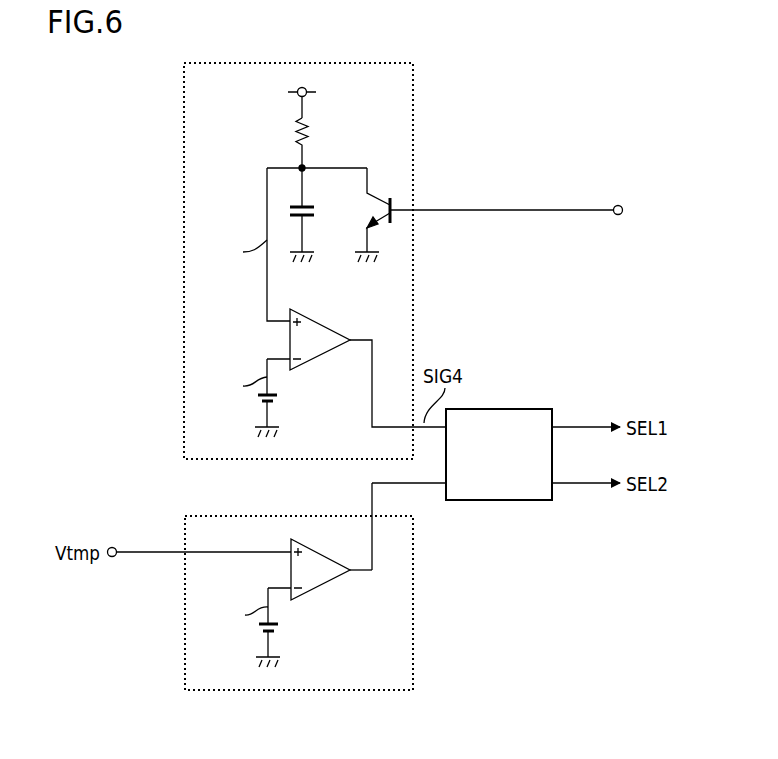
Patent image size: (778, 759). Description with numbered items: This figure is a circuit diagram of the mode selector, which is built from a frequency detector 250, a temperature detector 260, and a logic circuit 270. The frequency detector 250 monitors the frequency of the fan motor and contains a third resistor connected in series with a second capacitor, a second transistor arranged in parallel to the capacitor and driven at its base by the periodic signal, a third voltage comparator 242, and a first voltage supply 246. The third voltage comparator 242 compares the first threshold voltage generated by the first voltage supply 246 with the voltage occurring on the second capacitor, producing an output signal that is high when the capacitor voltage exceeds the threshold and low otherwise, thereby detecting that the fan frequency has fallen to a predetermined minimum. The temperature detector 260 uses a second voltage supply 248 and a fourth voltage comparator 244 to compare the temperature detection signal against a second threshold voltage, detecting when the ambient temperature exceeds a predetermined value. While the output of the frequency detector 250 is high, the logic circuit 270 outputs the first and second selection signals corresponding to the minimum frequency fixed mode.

The third voltage comparator 242 is at (331, 306).
The fourth voltage comparator 244 is at (320, 587).
The first voltage supply 246 is at (278, 398).
The second voltage supply 248 is at (278, 628).
The frequency detector 250 is at (413, 135).
The temperature detector 260 is at (413, 603).
The logic circuit 270 is at (500, 408).